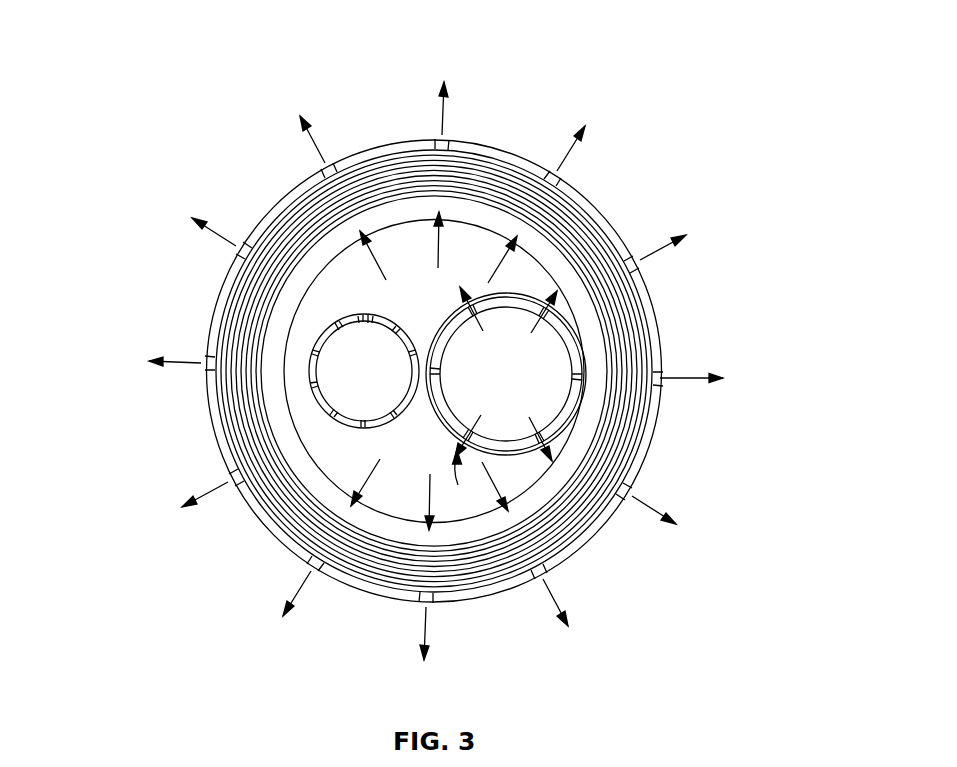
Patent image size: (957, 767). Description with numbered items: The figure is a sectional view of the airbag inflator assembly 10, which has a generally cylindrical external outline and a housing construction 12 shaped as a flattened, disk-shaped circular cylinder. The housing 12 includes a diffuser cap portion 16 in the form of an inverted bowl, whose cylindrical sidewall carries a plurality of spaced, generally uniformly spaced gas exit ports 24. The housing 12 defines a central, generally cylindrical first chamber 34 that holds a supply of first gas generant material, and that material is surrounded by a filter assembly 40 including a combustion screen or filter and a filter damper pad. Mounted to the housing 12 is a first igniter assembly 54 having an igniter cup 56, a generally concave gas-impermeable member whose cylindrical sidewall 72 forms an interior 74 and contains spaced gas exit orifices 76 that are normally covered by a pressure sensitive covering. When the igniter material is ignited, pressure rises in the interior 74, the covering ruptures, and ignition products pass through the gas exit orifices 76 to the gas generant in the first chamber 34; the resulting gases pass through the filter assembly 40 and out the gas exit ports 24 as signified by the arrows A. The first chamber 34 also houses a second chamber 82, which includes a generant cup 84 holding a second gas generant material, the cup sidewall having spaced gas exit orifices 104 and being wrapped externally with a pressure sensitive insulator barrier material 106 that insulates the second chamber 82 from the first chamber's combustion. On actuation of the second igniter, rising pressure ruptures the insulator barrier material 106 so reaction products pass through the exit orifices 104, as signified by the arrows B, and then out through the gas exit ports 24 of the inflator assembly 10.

The inflator assembly 10 is at (635, 93).
The housing construction 12 is at (607, 208).
The diffuser cap portion 16 is at (650, 447).
The gas exit ports 24 is at (663, 360).
The first chamber 34 is at (408, 253).
The filter assembly 40 is at (632, 305).
The first igniter assembly 54 is at (347, 395).
The igniter cup 56 is at (352, 315).
The cylindrical sidewall 72 is at (317, 333).
The interior 74 is at (333, 365).
The gas exit orifices 76 is at (396, 416).
The second chamber 82 is at (527, 413).
The generant cup 84 is at (484, 296).
The gas exit orifices 104 is at (583, 390).
The pressure sensitive insulator barrier material 106 is at (437, 425).
The arrows A is at (698, 372).
The arrows B is at (452, 483).